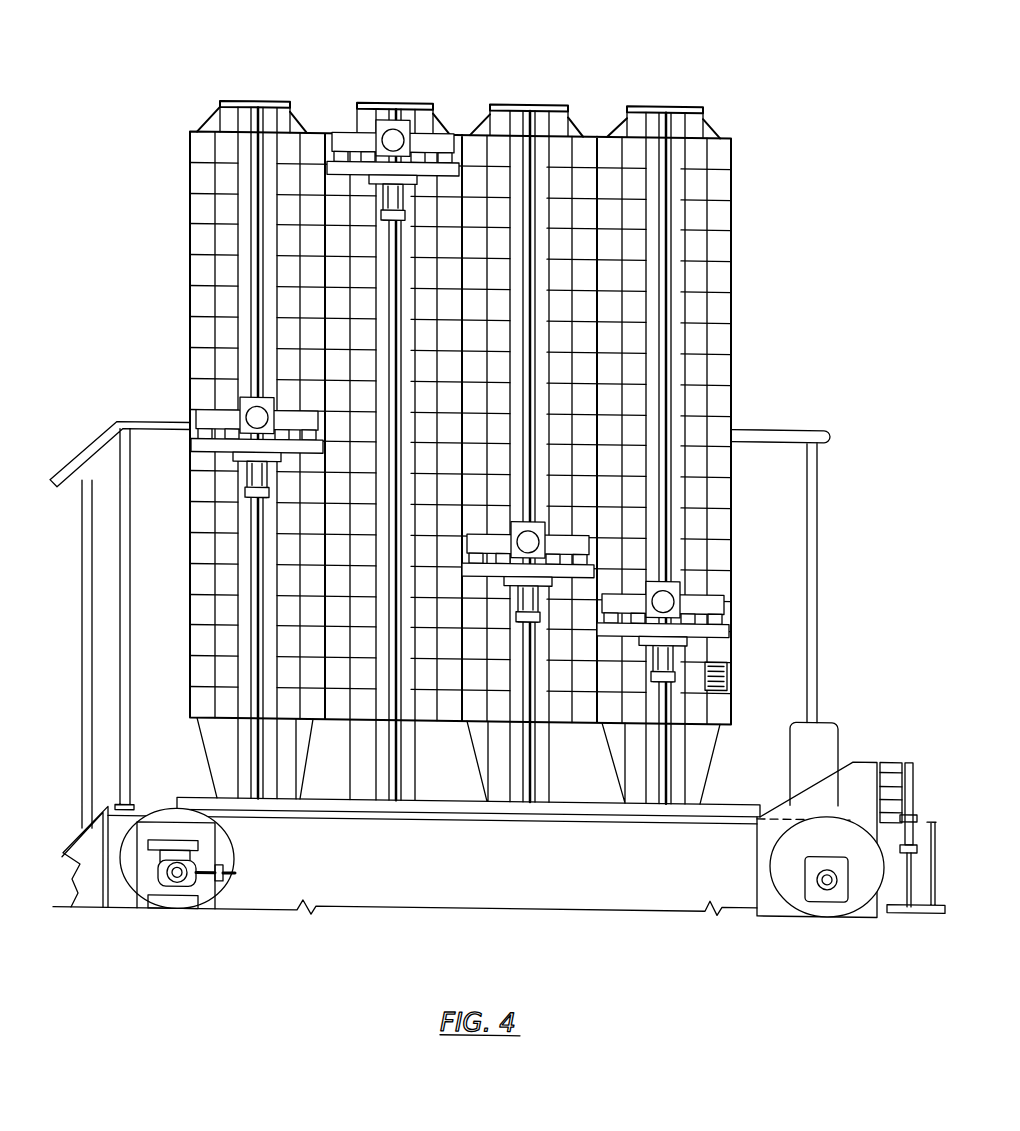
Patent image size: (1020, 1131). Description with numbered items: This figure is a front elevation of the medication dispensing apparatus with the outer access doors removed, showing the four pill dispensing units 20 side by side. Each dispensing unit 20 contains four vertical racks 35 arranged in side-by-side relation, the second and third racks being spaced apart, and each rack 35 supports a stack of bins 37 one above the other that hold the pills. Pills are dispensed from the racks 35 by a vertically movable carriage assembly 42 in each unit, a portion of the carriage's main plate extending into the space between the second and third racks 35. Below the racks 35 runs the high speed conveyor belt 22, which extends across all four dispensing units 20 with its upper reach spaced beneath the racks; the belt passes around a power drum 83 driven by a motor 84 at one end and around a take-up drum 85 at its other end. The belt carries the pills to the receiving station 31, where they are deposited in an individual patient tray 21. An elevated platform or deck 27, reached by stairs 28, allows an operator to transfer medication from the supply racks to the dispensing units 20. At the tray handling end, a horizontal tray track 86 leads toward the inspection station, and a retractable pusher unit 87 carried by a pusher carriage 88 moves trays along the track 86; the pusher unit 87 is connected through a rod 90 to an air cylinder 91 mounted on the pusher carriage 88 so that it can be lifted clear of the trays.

The pill dispensing unit 20 is at (341, 126).
The vertical rack 35 is at (303, 146).
The carriage assembly 42 is at (364, 121).
The bin 37 is at (729, 672).
The motor 84 is at (825, 734).
The elevated platform or deck 27 is at (741, 793).
The conveyor belt 22 is at (646, 809).
The stairs 28 is at (71, 849).
The receiving station 31 is at (906, 906).
The take-up drum 85 is at (234, 852).
The tray 21 is at (893, 870).
The power drum 83 is at (771, 861).
The pusher unit 87 is at (910, 857).
The pusher carriage 88 is at (905, 716).
The air cylinder 91 is at (909, 778).
The rod 90 is at (913, 826).
The tray track 86 is at (925, 906).